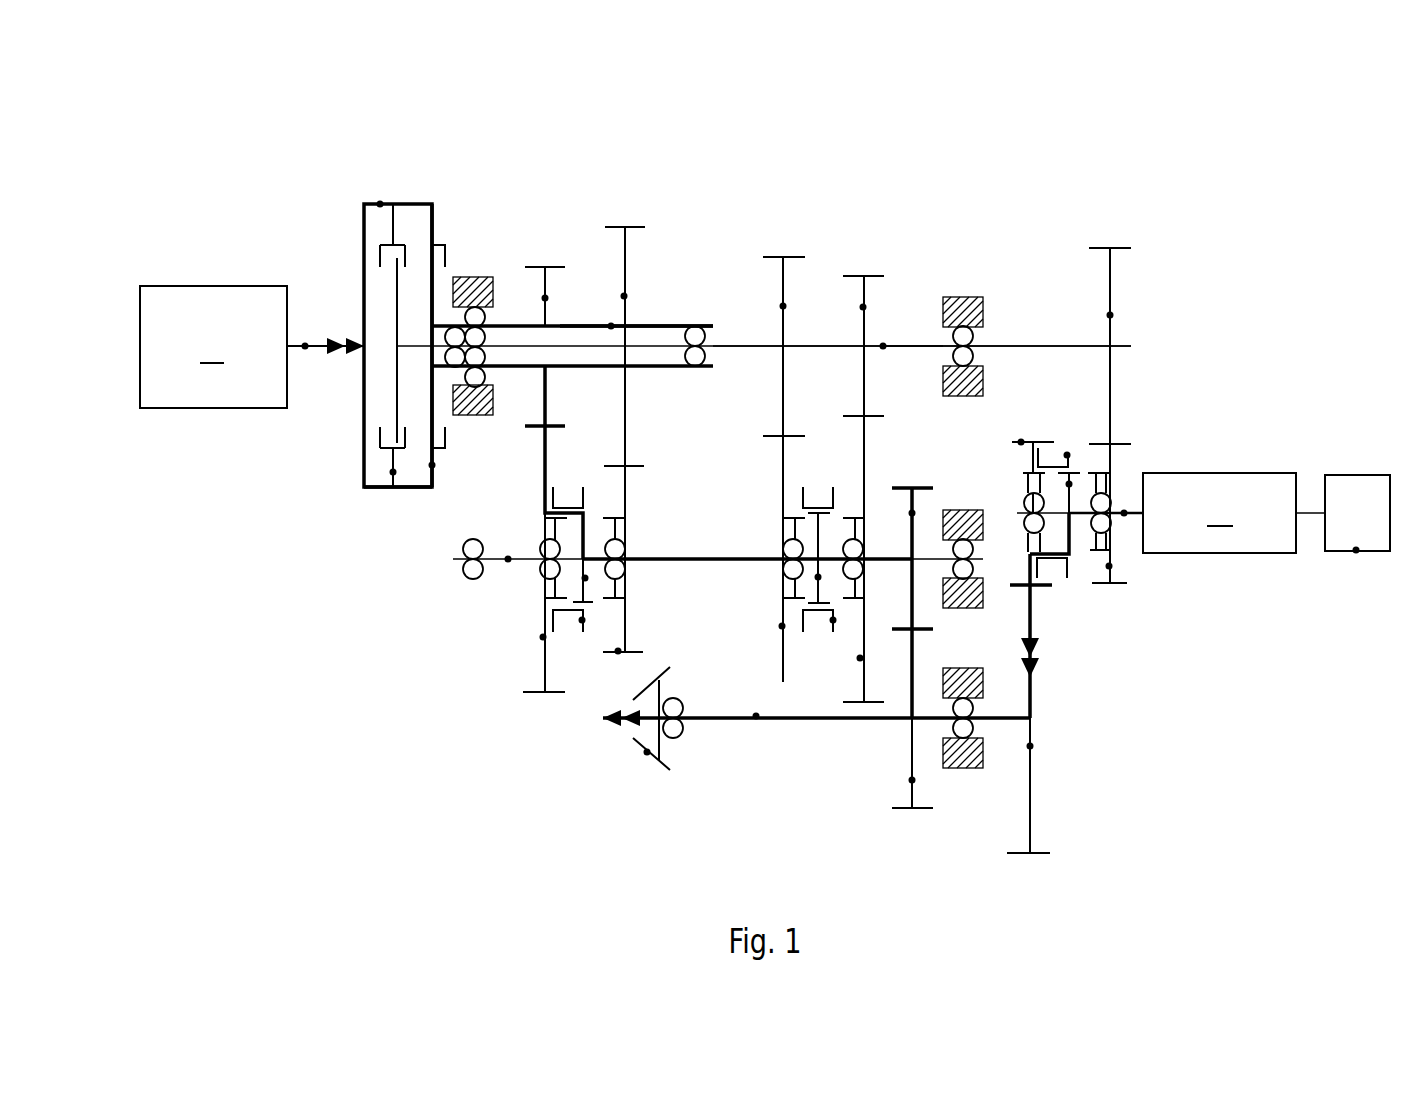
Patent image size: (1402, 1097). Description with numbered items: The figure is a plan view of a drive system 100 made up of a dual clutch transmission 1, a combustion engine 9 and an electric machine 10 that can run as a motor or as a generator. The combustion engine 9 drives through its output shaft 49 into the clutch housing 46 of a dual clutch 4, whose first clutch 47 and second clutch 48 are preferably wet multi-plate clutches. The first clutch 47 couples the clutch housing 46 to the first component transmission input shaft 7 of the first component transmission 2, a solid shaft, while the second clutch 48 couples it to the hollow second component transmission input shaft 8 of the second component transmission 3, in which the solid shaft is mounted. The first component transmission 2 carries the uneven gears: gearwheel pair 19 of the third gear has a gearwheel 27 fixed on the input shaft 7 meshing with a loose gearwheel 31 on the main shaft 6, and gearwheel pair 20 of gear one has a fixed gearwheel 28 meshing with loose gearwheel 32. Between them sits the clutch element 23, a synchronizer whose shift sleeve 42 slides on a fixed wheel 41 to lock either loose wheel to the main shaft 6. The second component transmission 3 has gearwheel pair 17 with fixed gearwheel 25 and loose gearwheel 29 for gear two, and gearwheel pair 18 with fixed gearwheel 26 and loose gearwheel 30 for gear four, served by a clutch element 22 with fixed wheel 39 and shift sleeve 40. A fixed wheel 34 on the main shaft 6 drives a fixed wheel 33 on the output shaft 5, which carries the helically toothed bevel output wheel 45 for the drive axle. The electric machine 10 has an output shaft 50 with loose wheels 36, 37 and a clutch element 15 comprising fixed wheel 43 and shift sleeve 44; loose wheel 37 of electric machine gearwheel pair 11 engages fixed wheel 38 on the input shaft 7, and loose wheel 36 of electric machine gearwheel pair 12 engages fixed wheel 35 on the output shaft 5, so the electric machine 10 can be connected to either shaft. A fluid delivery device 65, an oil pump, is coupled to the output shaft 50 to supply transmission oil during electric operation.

The drive system 100 is at (249, 168).
The dual clutch transmission 1 is at (706, 206).
The first component transmission 2 is at (883, 346).
The second component transmission 3 is at (577, 310).
The dual clutch 4 is at (372, 512).
The output shaft 5 is at (756, 716).
The main shaft 6 is at (508, 559).
The first component transmission input shaft 7 is at (920, 318).
The second component transmission input shaft 8 is at (611, 326).
The combustion engine 9 is at (213, 347).
The electric machine 10 is at (1234, 513).
The electric machine gearwheel pair 11 is at (1126, 269).
The electric machine gearwheel pair 12 is at (1047, 786).
The clutch element 15 is at (1086, 590).
The gearwheel pair 17 is at (534, 246).
The gearwheel pair 18 is at (626, 214).
The gearwheel pair 19 is at (782, 242).
The gearwheel pair 20 is at (863, 260).
The clutch element 22 is at (561, 637).
The clutch element 23 is at (810, 643).
The gearwheel 25 is at (545, 298).
The gearwheel 26 is at (624, 296).
The gearwheel 27 is at (783, 306).
The gearwheel 28 is at (863, 307).
The gearwheel 29 is at (543, 637).
The gearwheel 30 is at (618, 651).
The gearwheel 31 is at (782, 626).
The gearwheel 32 is at (860, 658).
The fixed wheel 33 is at (912, 780).
The fixed wheel 34 is at (912, 513).
The gearwheel 35 is at (1030, 746).
The loose wheel 36 is at (1021, 442).
The loose wheel 37 is at (1109, 566).
The fixed wheel 38 is at (1110, 315).
The fixed wheel 39 is at (585, 578).
The shift sleeve 40 is at (582, 620).
The fixed wheel 41 is at (818, 577).
The shift sleeve 42 is at (833, 620).
The fixed wheel 43 is at (1069, 484).
The shift sleeve 44 is at (1067, 455).
The output wheel 45 is at (647, 752).
The clutch housing 46 is at (380, 203).
The first clutch 47 is at (393, 472).
The second clutch 48 is at (432, 465).
The output shaft 49 is at (305, 346).
The output shaft 50 is at (1124, 513).
The fluid delivery device 65 is at (1356, 550).